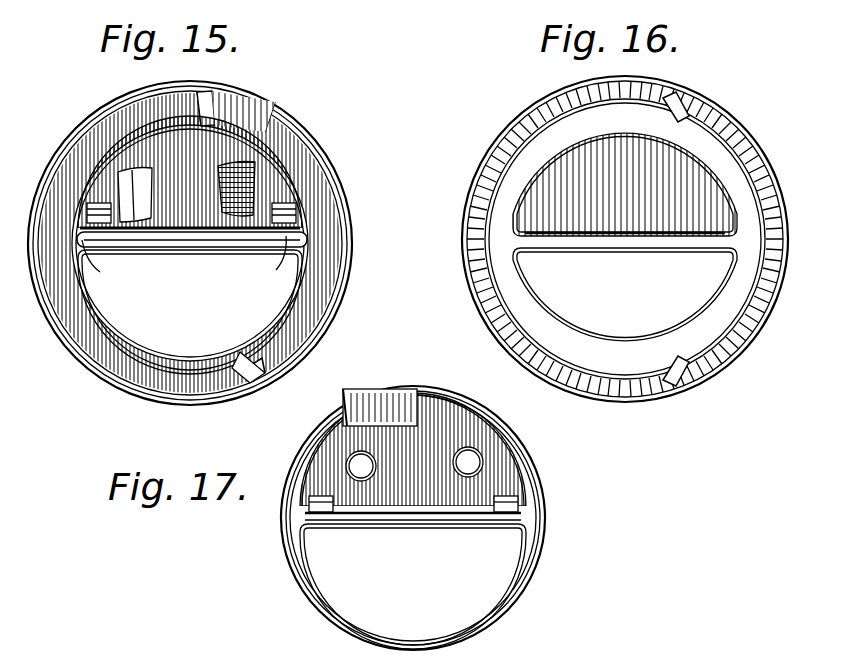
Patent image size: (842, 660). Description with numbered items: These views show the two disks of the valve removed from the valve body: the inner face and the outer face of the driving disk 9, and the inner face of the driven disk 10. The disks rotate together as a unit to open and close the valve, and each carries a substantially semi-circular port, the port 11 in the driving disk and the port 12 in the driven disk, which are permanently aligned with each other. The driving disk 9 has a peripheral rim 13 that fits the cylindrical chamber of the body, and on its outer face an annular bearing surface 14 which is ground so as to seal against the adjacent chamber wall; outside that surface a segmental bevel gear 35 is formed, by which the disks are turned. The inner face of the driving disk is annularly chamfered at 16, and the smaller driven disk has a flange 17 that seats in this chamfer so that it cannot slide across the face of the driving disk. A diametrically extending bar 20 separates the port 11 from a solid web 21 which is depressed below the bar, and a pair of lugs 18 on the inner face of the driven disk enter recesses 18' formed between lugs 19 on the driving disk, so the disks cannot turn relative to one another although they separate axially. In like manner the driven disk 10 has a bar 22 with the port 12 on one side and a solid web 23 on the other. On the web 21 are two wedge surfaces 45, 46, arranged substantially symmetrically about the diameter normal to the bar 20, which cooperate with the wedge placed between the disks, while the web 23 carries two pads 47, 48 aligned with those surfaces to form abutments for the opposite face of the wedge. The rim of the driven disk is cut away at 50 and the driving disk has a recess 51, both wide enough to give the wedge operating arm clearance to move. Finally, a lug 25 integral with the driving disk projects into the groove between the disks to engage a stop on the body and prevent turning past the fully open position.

In FIG. 15, the driving disk 9 is at (350, 195).
In FIG. 16, the driving disk 9 is at (758, 325).
In FIG. 17, the driven disk 10 is at (534, 468).
In FIG. 15, the port in the driving disk 11 is at (190, 312).
In FIG. 16, the port in the driving disk 11 is at (625, 294).
In FIG. 17, the port in the driven disk 12 is at (413, 586).
In FIG. 15, the peripheral rim 13 is at (308, 135).
In FIG. 16, the annular bearing surface 14 is at (500, 203).
In FIG. 15, the chamfer 16 is at (88, 292).
In FIG. 17, the flange 17 is at (300, 522).
In FIG. 17, the lugs 18 is at (413, 526).
In FIG. 15, the recesses 18' is at (184, 258).
In FIG. 15, the lugs 19 is at (98, 213).
In FIG. 15, the ridge or bar 20 is at (206, 248).
In FIG. 15, the solid web 21 is at (190, 172).
In FIG. 16, the solid web 21 is at (625, 184).
In FIG. 17, the ridge or bar 22 is at (420, 520).
In FIG. 17, the solid web 23 is at (413, 449).
In FIG. 15, the lug 25 is at (256, 375).
In FIG. 16, the segmental bevel gear 35 is at (504, 156).
In FIG. 15, the wedge surface 45 is at (240, 200).
In FIG. 15, the wedge surface 46 is at (150, 205).
In FIG. 17, the pad 47 is at (370, 470).
In FIG. 17, the pad 48 is at (462, 470).
In FIG. 17, the cut away portion 50 is at (388, 404).
In FIG. 15, the recess 51 is at (252, 102).